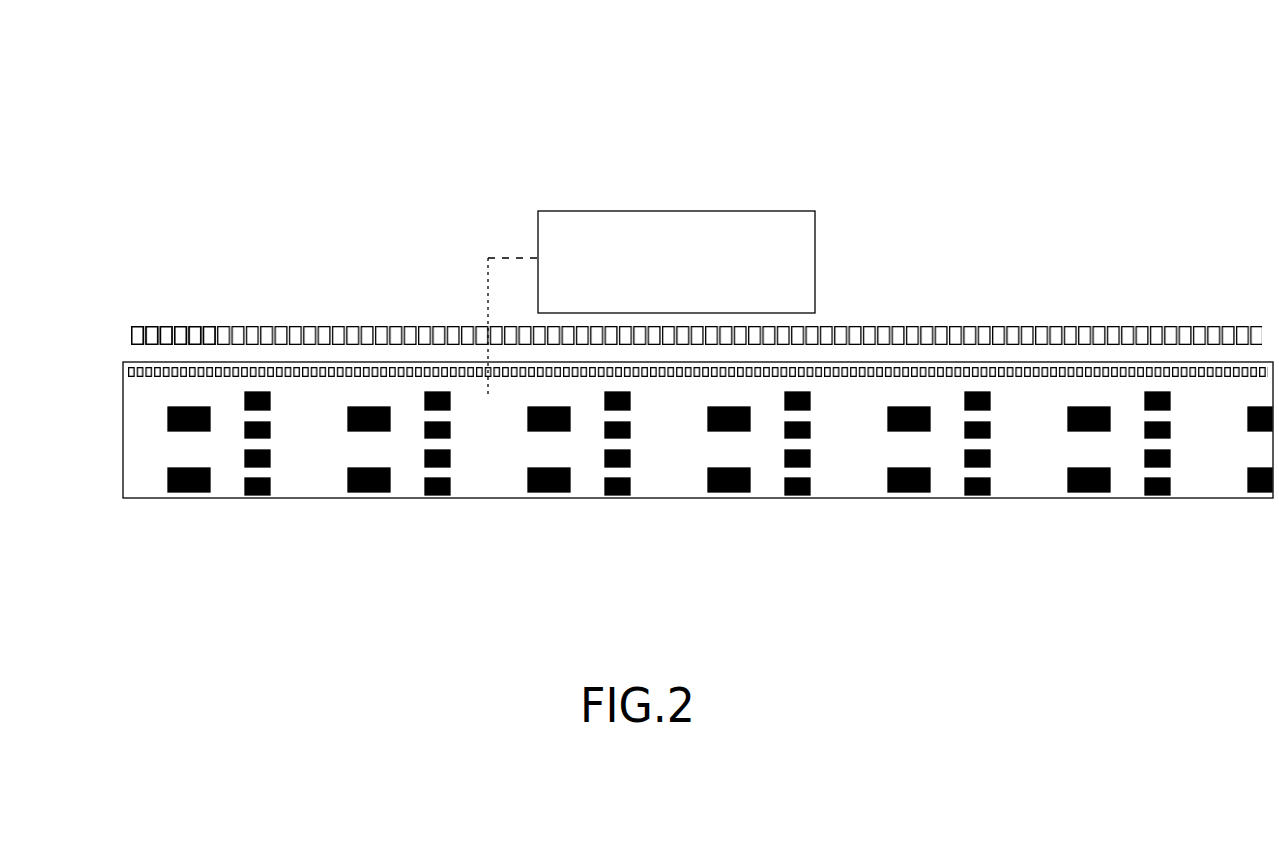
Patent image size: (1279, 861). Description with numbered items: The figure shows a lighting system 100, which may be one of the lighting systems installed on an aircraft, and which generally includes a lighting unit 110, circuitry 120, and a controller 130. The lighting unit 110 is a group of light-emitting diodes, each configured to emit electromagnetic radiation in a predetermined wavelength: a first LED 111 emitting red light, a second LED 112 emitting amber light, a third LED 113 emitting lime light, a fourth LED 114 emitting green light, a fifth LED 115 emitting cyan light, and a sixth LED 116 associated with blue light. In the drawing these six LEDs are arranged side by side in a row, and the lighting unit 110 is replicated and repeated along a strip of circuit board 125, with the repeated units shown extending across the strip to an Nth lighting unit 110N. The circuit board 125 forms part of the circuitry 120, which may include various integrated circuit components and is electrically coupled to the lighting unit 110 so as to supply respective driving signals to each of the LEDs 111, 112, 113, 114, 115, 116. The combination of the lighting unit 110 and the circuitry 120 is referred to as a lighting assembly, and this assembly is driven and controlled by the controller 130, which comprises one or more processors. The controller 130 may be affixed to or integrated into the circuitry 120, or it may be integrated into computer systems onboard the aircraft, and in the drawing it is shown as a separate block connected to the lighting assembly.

The lighting system 100 is at (265, 130).
The lighting unit 110 is at (213, 314).
The Nth sensing electrode group 110N is at (303, 314).
The first LED 111 is at (137, 346).
The second LED 112 is at (151, 346).
The third LED 113 is at (166, 346).
The fourth LED 114 is at (181, 346).
The fifth LED 115 is at (195, 346).
The sixth LED 116 is at (209, 346).
The circuitry 120 is at (231, 514).
The circuit board 125 is at (475, 490).
The controller 130 is at (694, 276).